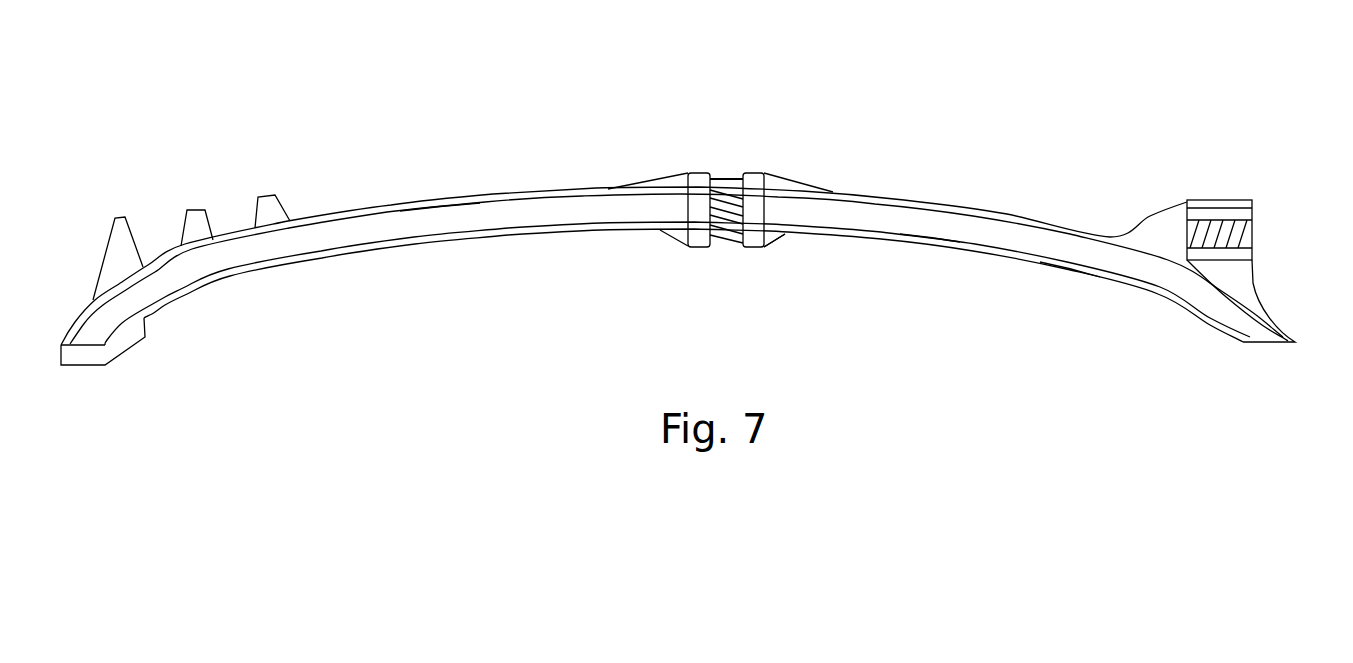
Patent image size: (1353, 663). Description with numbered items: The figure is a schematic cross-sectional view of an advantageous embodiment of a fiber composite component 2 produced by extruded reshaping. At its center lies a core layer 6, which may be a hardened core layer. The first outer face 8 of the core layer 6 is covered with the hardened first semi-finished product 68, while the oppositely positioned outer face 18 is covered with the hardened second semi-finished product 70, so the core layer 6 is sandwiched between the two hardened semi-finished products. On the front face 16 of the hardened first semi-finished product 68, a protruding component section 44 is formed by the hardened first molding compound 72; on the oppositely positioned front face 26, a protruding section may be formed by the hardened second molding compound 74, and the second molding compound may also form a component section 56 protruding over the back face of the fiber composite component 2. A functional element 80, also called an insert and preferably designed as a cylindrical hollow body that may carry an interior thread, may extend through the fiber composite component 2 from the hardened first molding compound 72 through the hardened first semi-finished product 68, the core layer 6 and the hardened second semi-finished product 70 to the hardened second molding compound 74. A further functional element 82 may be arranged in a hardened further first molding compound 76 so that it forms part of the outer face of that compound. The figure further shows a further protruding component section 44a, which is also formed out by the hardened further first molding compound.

The fiber composite component 2 is at (1099, 101).
The core layer 6 is at (930, 241).
The first outer face 8 is at (443, 212).
The front face 16 is at (930, 192).
The outer face 18 is at (552, 220).
The front face 26 is at (1067, 273).
The protruding component section 44 is at (825, 181).
The further protruding component section 44a is at (283, 189).
The component section 56 is at (789, 244).
The hardened first semi-finished product 68 is at (1019, 208).
The hardened second semi-finished product 70 is at (1014, 261).
The hardened first molding compound 72 is at (784, 169).
The hardened second molding compound 74 is at (773, 250).
The hardened further first molding compound 76 is at (1255, 189).
The functional element 80 is at (752, 166).
The further functional element 82 is at (1260, 203).